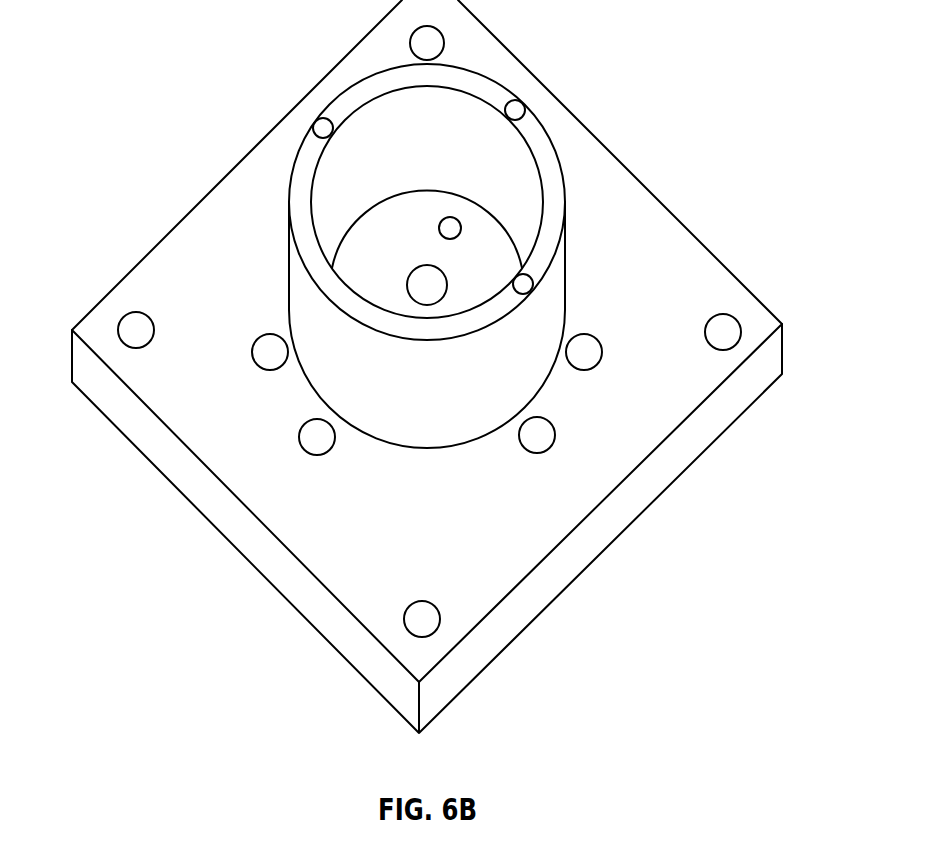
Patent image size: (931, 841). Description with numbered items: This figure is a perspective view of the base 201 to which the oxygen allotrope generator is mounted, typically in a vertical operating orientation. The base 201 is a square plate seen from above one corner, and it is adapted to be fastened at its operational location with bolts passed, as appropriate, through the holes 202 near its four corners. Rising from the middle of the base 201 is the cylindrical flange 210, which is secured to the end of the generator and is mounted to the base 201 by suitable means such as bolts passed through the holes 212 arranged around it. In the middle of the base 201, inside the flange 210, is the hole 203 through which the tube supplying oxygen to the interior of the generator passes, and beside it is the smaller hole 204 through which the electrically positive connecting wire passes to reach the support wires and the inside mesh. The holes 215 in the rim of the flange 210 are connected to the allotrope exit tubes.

The base 201 is at (668, 458).
The holes 202 is at (727, 327).
The hole 203 is at (419, 266).
The hole 204 is at (450, 224).
The flange 210 is at (538, 140).
The holes 212 is at (589, 352).
The holes 215 is at (325, 118).